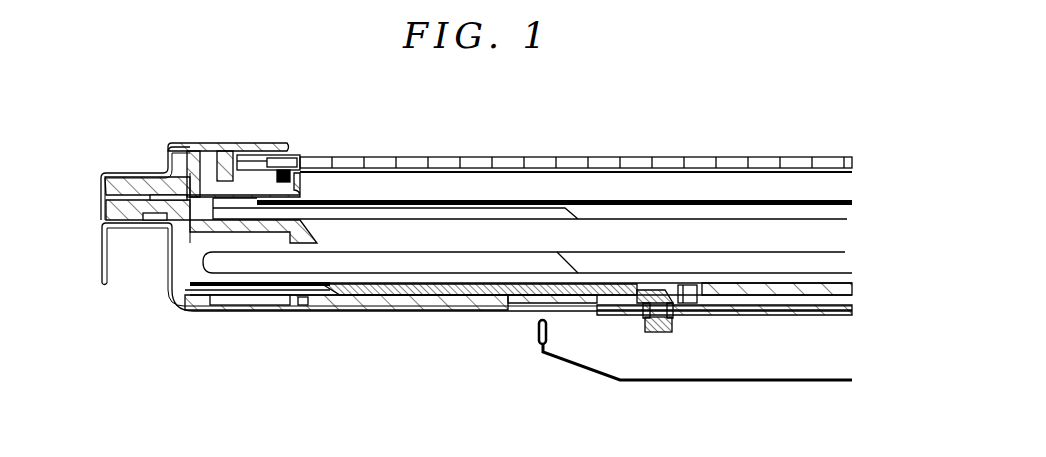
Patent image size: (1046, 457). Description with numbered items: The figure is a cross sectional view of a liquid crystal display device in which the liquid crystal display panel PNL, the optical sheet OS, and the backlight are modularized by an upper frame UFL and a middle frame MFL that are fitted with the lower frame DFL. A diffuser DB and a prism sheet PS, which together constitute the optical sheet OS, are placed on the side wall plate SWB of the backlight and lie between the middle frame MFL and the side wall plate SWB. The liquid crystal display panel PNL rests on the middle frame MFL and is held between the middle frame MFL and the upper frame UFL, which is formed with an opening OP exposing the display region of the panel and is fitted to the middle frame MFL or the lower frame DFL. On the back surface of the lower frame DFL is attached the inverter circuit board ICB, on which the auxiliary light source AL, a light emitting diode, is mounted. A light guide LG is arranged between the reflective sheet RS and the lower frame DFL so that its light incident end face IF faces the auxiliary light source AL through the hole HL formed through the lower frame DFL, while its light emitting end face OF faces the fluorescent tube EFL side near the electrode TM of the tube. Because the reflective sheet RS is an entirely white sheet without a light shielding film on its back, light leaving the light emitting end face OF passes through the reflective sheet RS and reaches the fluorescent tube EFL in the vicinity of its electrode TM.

The middle frame MFL is at (158, 172).
The upper frame UFL is at (217, 143).
The opening OP is at (291, 148).
The liquid crystal display panel PNL is at (414, 156).
The prism sheet PS is at (545, 202).
The diffuser DB is at (577, 207).
The optical sheet OS is at (697, 57).
The light emitting end face OF is at (334, 288).
The side wall plate SWB is at (172, 248).
The electrode TM is at (282, 263).
The lower frame DFL is at (337, 292).
The light guide LG is at (385, 312).
The fluorescent tube EFL is at (476, 266).
The reflective sheet RS is at (510, 308).
The hole HL is at (643, 317).
The light incident end face IF is at (680, 304).
The auxiliary light source AL is at (653, 333).
The inverter circuit board ICB is at (781, 312).